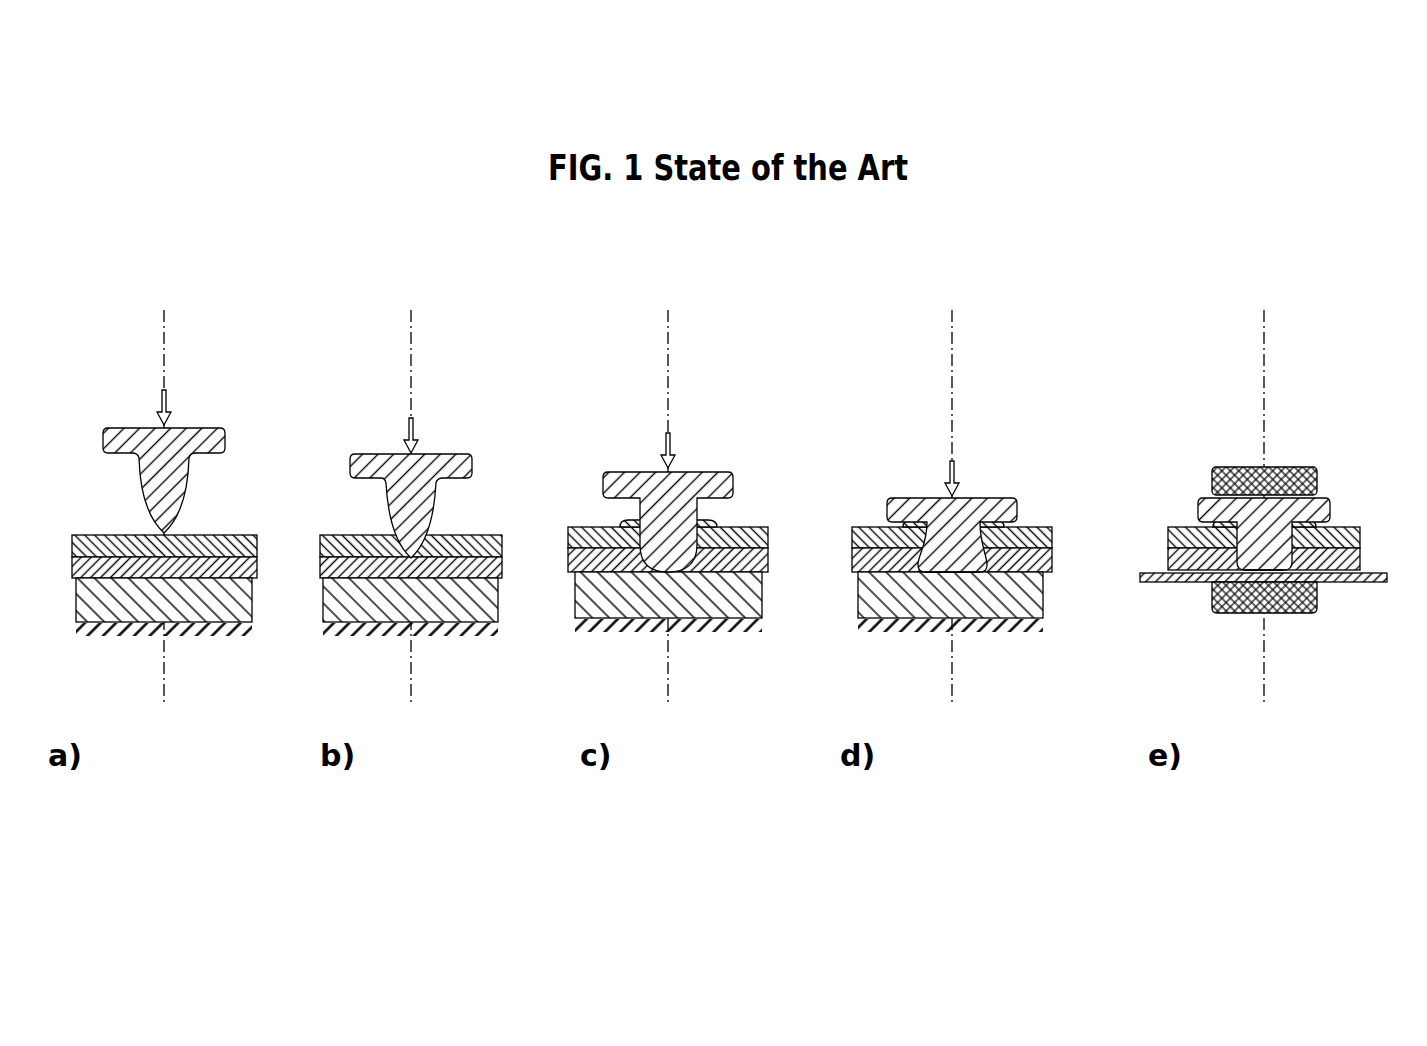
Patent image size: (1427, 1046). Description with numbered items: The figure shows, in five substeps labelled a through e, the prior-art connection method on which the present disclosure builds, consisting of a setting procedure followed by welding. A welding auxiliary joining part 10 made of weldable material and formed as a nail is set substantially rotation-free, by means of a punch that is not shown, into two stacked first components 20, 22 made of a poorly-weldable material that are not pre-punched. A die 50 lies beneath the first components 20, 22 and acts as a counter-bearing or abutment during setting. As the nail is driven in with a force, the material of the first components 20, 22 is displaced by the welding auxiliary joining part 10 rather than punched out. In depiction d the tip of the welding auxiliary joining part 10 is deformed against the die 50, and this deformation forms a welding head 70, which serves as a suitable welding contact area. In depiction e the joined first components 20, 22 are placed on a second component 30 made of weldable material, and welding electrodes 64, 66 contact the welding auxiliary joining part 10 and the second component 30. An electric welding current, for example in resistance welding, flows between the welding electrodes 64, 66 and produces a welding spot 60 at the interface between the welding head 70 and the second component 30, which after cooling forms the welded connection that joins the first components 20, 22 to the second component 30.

The welding auxiliary joining part 10 is at (140, 438).
The first component 20 is at (207, 543).
The first component 22 is at (102, 567).
The second component 30 is at (1375, 580).
The die 50 is at (222, 608).
The welding spot 60 is at (1258, 573).
The welding electrode 64 is at (1295, 602).
The welding electrode 66 is at (1285, 478).
The welding head 70 is at (940, 565).